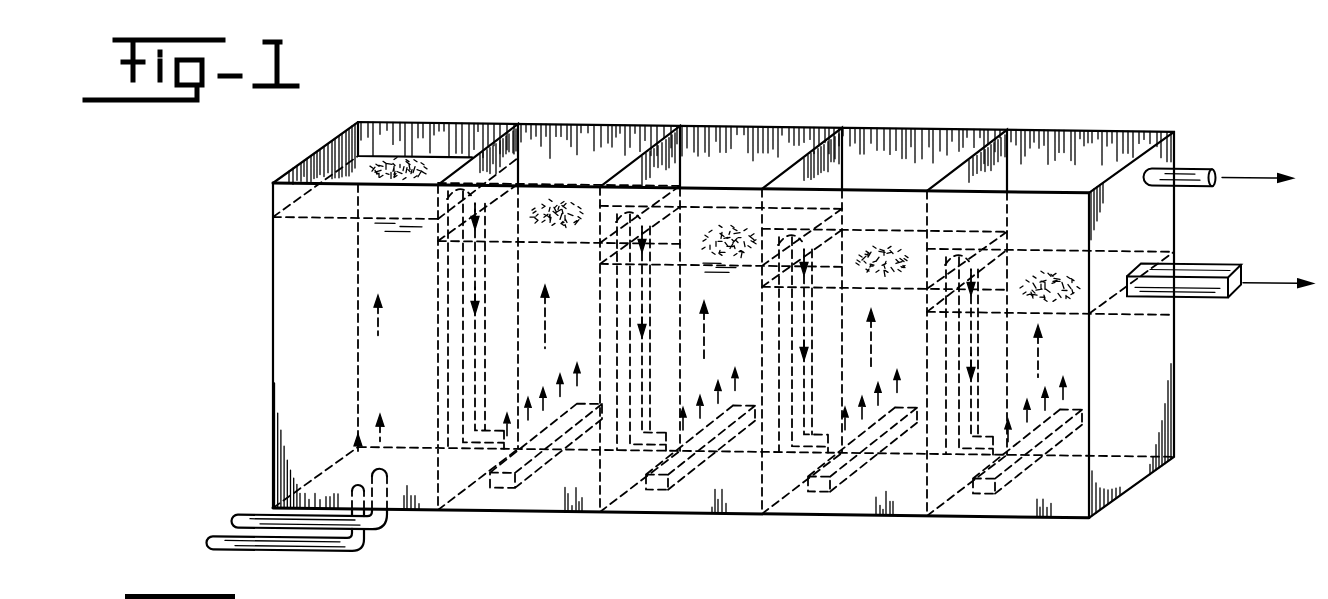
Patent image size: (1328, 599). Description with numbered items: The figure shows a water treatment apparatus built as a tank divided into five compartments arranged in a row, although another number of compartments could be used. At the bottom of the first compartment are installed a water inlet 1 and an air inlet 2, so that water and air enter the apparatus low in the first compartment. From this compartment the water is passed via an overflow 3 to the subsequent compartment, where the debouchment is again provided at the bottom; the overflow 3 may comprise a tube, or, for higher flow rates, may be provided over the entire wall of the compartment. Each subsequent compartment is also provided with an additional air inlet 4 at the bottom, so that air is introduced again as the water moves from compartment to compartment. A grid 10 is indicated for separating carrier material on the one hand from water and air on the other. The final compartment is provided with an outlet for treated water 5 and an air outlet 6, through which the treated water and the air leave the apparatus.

The water inlet 1 is at (253, 514).
The air inlet 2 is at (246, 550).
The overflow 3 is at (957, 240).
The additional air inlet 4 is at (842, 528).
The outlet for treated water 5 is at (1194, 256).
The air outlet 6 is at (1196, 158).
The grid 10 is at (412, 158).